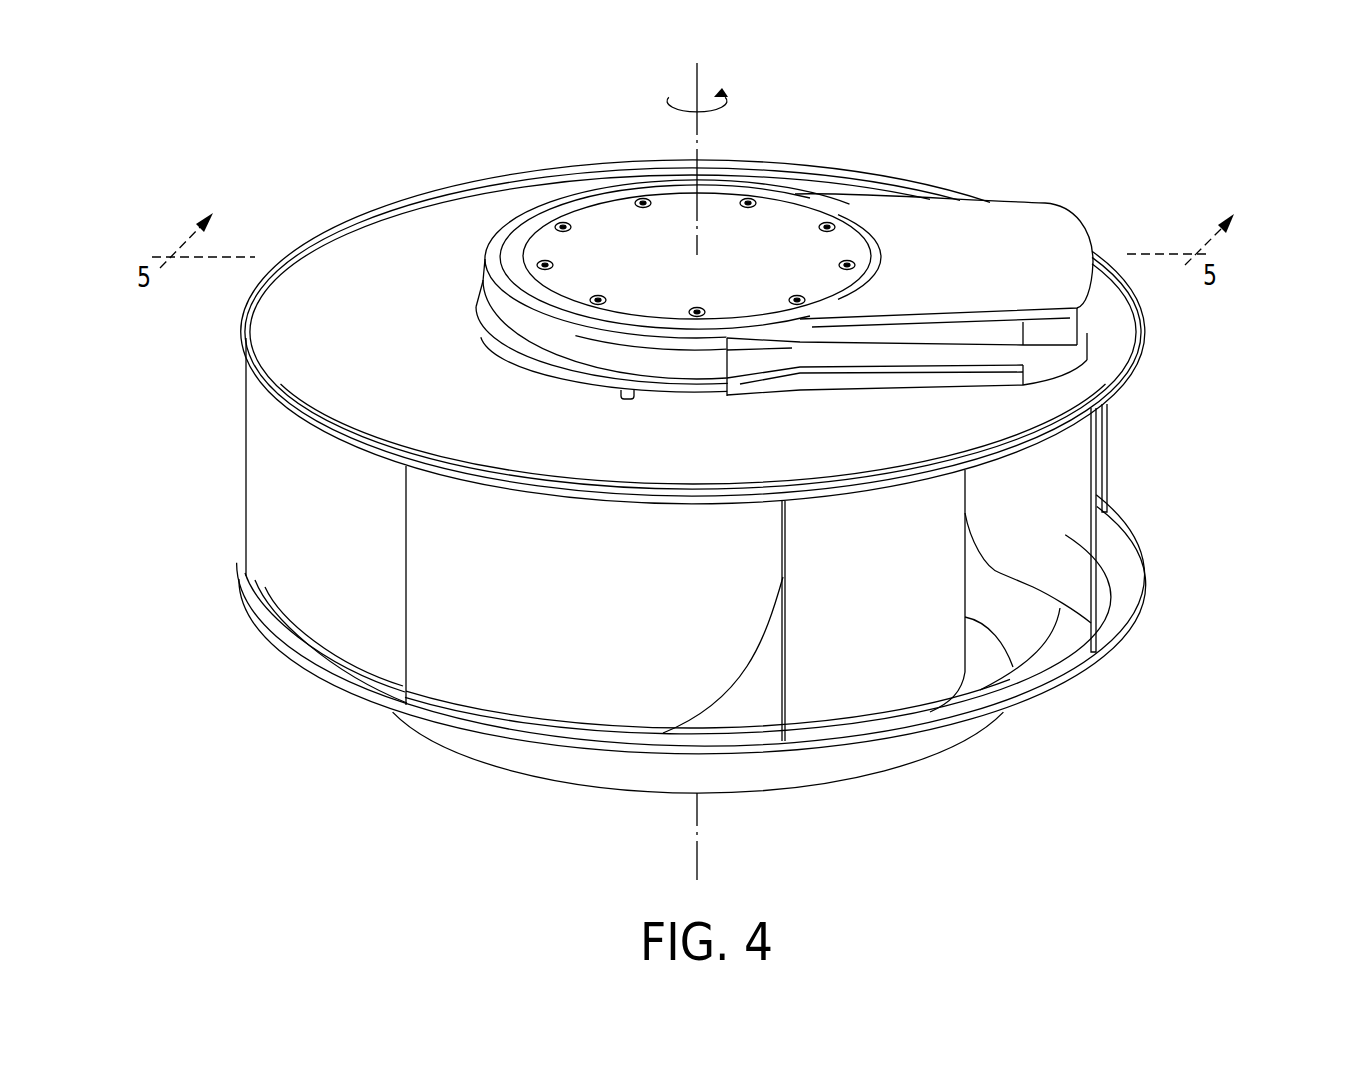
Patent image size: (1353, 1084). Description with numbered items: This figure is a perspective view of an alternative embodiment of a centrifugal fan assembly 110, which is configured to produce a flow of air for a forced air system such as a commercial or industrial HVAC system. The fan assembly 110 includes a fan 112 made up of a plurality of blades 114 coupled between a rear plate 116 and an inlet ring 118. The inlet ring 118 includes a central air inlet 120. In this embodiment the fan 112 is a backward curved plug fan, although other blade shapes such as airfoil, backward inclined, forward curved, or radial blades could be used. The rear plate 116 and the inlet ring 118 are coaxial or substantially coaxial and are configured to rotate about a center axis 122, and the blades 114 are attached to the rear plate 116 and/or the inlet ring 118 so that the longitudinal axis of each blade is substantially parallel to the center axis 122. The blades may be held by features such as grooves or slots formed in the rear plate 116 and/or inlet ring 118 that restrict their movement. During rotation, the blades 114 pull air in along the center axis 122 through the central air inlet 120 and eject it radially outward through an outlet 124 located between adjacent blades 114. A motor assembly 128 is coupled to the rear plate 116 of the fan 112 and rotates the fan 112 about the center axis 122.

The centrifugal fan assembly 110 is at (301, 164).
The fan 112 is at (1140, 450).
The blades 114 is at (280, 533).
The rear plate 116 is at (313, 345).
The inlet ring 118 is at (1137, 593).
The central air inlet 120 is at (865, 791).
The center axis 122 is at (697, 74).
The outlet 124 is at (1052, 652).
The motor assembly 128 is at (496, 234).